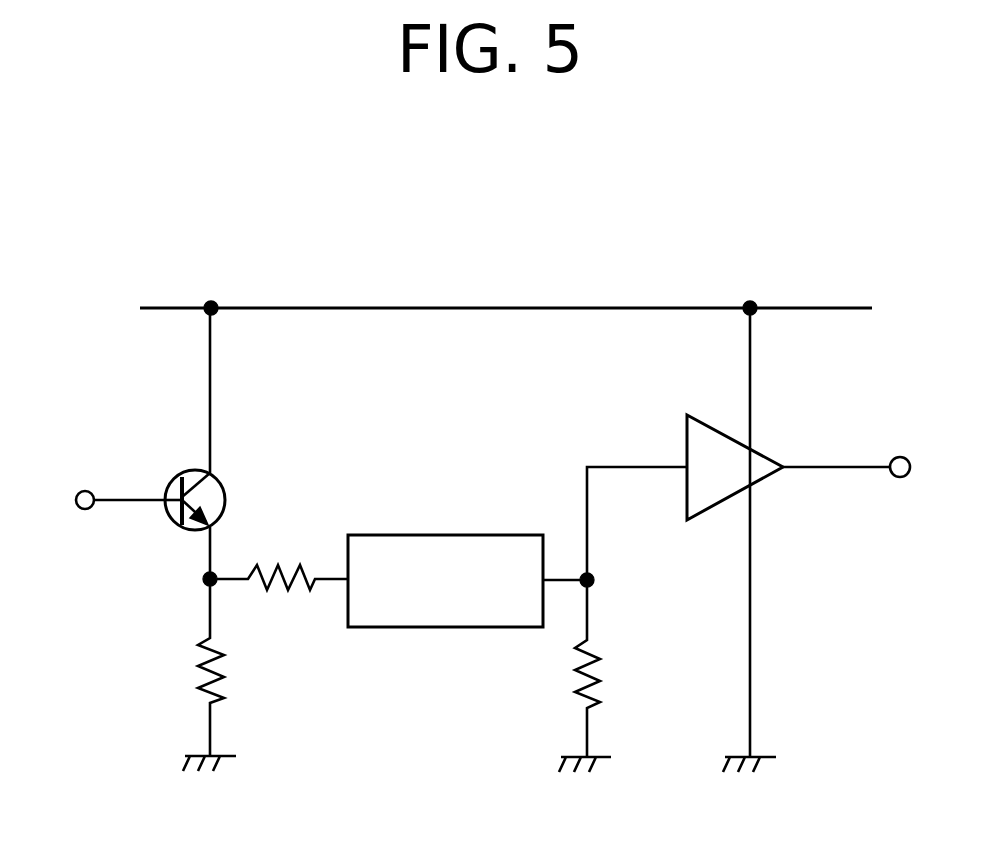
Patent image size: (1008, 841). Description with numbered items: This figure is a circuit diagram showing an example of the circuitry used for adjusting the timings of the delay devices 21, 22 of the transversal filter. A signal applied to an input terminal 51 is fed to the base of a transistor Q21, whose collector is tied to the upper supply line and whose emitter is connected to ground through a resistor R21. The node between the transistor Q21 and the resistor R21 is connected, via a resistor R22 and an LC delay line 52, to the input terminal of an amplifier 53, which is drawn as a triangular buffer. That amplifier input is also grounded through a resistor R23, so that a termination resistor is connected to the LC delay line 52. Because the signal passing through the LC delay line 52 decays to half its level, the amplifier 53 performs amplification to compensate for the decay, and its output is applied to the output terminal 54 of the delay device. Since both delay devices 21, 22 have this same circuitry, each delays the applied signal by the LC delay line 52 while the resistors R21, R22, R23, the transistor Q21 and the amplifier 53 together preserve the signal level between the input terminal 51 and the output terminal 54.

The delay device 21 is at (506, 242).
The delay device 22 is at (553, 291).
The input terminal 51 is at (85, 490).
The transistor Q21 is at (226, 500).
The resistor R21 is at (199, 677).
The resistor R22 is at (285, 583).
The resistor R23 is at (600, 688).
The LC delay line 52 is at (467, 534).
The amplifier 53 is at (763, 478).
The output terminal 54 is at (900, 478).